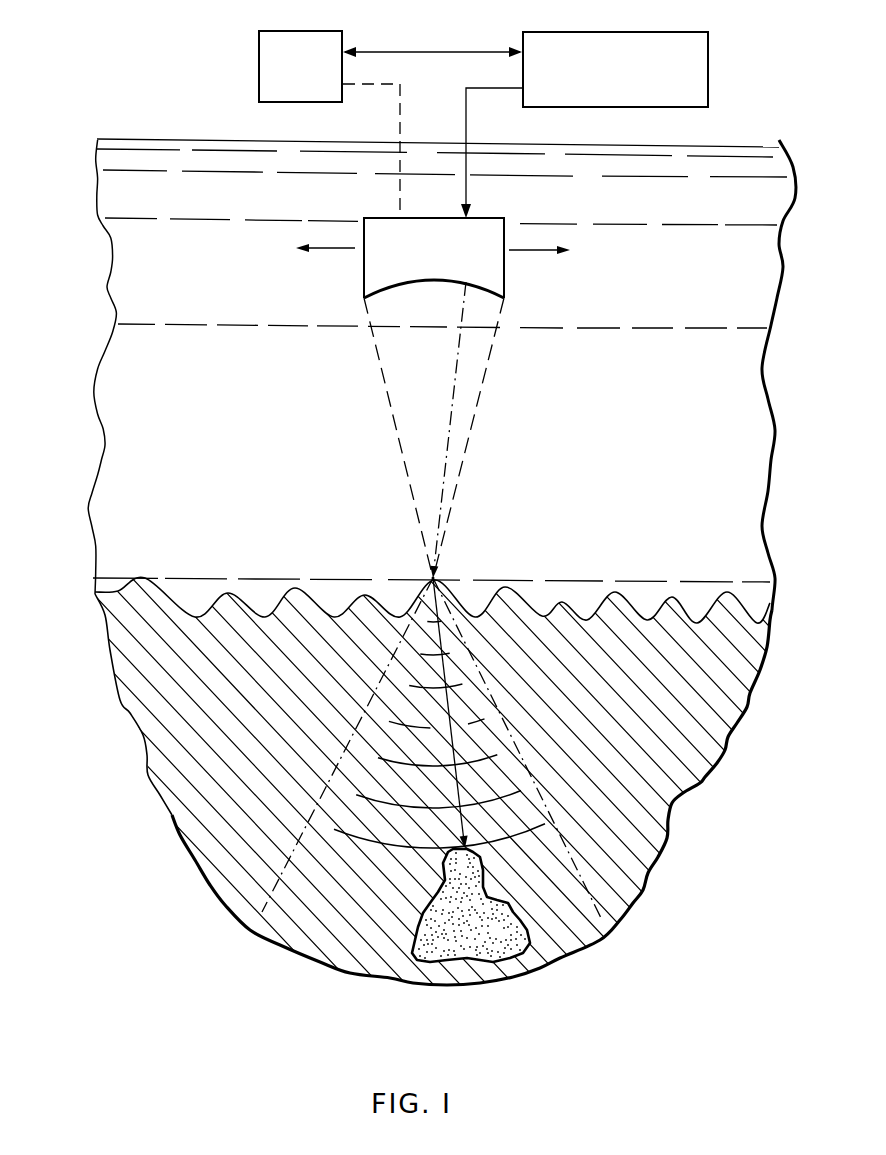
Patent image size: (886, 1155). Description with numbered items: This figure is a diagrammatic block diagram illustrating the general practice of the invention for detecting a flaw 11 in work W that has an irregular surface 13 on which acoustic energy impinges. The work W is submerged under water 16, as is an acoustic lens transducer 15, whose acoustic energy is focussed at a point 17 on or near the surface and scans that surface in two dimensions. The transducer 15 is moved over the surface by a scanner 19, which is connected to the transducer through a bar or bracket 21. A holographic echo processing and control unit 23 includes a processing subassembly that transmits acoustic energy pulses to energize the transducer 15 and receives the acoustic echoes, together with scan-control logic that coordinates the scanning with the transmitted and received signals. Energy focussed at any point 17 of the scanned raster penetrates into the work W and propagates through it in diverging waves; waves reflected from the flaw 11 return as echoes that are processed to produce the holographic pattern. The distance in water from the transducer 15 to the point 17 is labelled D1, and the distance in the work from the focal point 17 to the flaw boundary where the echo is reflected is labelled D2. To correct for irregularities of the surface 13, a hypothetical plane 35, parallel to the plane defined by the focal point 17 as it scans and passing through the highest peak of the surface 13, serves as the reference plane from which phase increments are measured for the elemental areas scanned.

The flaw 11 is at (465, 955).
The irregular surface 13 is at (96, 592).
The acoustic lens transducer 15 is at (380, 218).
The water 16 is at (768, 287).
The focal point 17 is at (436, 578).
The scanner 19 is at (287, 31).
The bar or bracket 21 is at (400, 113).
The holographic echo processing and control unit 23 is at (682, 32).
The hypothetical plane 35 is at (126, 578).
The work W is at (152, 757).
The distance in water from transducer to focal point D1 is at (434, 430).
The distance in work from focal point to flaw boundary D2 is at (432, 749).